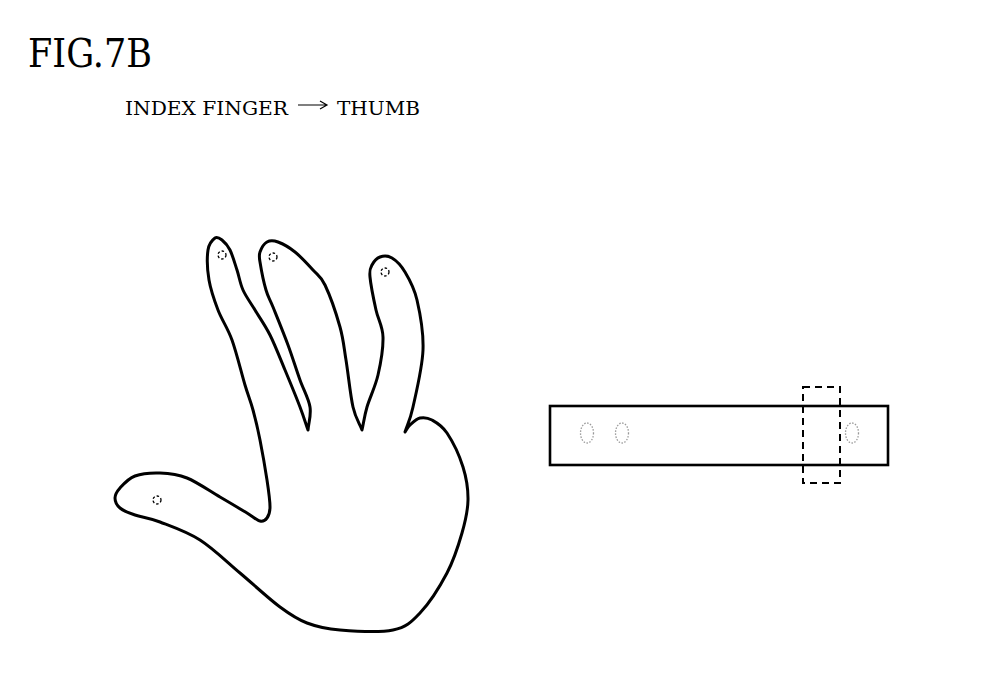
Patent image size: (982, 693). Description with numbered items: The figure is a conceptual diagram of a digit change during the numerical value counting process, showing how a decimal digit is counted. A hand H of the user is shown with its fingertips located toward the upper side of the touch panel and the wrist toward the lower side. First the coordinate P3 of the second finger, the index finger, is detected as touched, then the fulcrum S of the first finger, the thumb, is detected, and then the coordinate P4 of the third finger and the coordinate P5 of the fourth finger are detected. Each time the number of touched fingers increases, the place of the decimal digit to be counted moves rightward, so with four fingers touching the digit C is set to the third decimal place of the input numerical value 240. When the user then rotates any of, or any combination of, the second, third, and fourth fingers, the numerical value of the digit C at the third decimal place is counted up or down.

The hand H is at (448, 573).
The coordinate of the second finger P3 is at (213, 240).
The coordinate of the third finger P4 is at (270, 242).
The coordinate of the fourth finger P5 is at (393, 257).
The fulcrum of the first finger S is at (153, 503).
The input numerical value 240 is at (585, 405).
The digit C is at (820, 385).